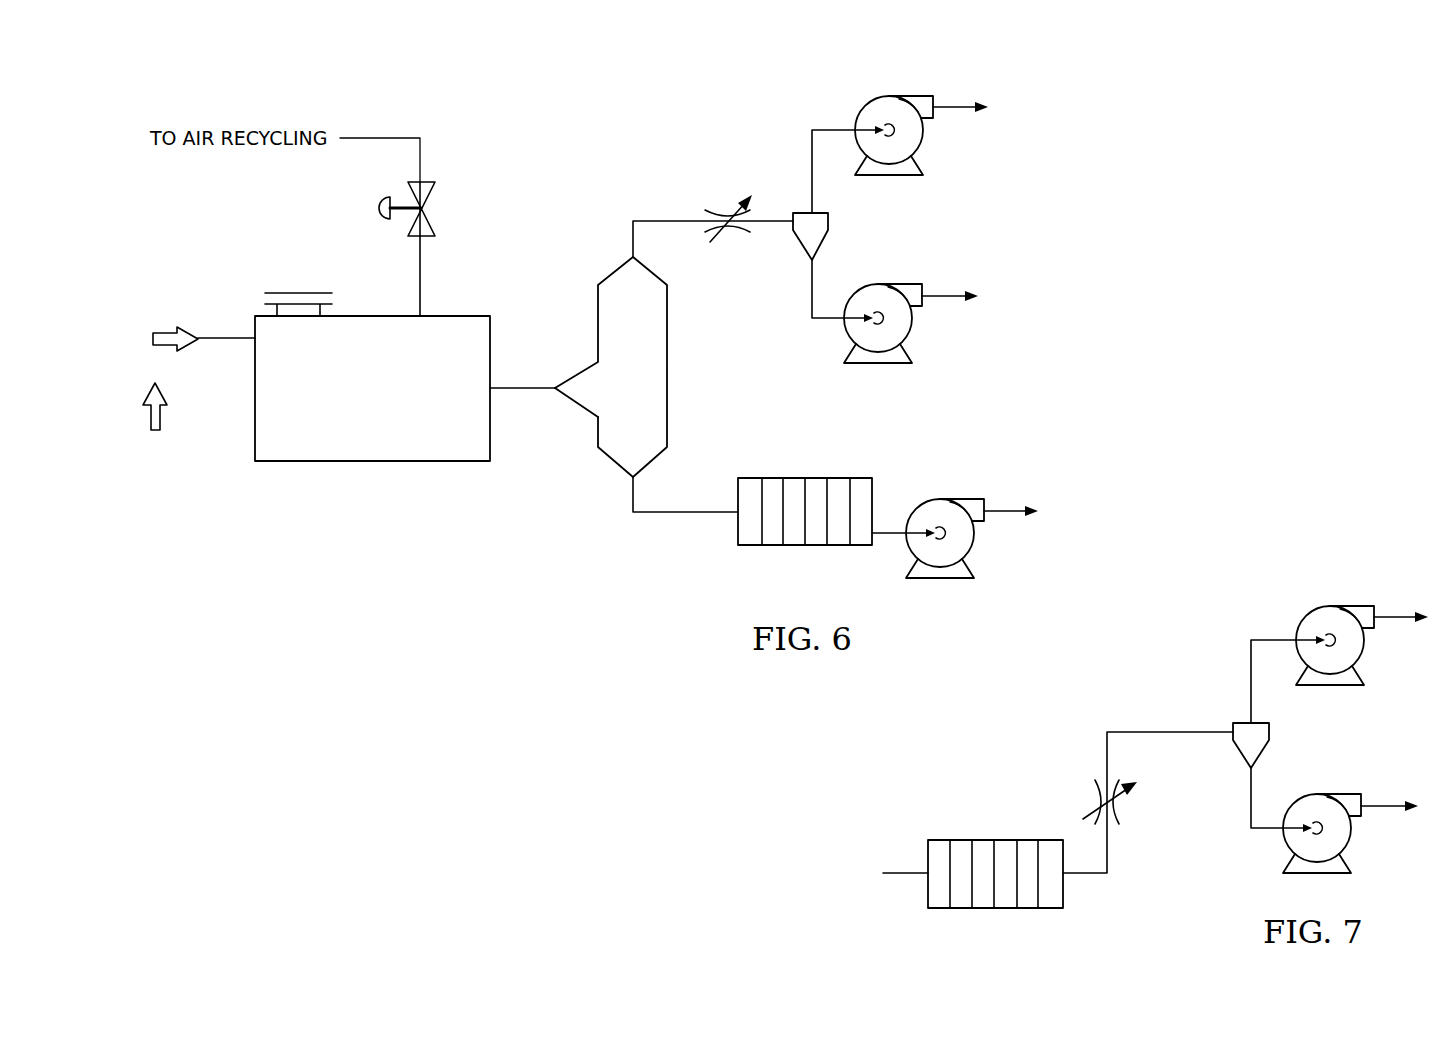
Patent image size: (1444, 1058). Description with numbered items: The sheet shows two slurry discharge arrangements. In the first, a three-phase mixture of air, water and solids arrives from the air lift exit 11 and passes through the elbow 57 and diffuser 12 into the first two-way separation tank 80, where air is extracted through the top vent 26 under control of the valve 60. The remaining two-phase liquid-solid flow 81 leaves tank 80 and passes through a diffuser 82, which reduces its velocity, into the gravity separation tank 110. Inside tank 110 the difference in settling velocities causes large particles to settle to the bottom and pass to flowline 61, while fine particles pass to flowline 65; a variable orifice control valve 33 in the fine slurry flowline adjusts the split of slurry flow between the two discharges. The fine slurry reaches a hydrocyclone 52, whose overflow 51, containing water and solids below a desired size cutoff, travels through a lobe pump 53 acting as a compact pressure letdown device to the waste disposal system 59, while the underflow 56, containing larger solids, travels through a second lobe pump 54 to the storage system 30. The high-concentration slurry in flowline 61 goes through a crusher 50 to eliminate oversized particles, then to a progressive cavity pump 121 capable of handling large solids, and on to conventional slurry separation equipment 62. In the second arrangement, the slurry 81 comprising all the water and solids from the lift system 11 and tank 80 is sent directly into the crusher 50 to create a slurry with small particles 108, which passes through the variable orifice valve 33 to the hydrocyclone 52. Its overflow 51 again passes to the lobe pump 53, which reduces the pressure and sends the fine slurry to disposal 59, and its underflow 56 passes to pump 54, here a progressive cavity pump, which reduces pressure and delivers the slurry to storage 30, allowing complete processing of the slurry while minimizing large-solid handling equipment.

In FIG. 6, the air lift exit 11 is at (163, 415).
In FIG. 6, the diffuser 12 is at (226, 338).
In FIG. 6, the top vent 26 is at (421, 277).
In FIG. 6, the storage system 30 is at (947, 298).
In FIG. 7, the storage system 30 is at (1386, 809).
In FIG. 6, the variable orifice valve 33 is at (731, 235).
In FIG. 7, the variable orifice valve 33 is at (1093, 790).
In FIG. 6, the crusher 50 is at (818, 548).
In FIG. 7, the crusher 50 is at (1008, 910).
In FIG. 6, the hydrocyclone overflow 51 is at (812, 172).
In FIG. 7, the hydrocyclone overflow 51 is at (1251, 681).
In FIG. 6, the hydrocyclone 52 is at (828, 224).
In FIG. 7, the hydrocyclone 52 is at (1269, 734).
In FIG. 6, the lobe pump 53 is at (888, 96).
In FIG. 7, the lobe pump 53 is at (1330, 606).
In FIG. 6, the lobe pump 54 is at (880, 285).
In FIG. 7, the lobe pump 54 is at (1319, 795).
In FIG. 6, the hydrocyclone underflow 56 is at (812, 289).
In FIG. 7, the hydrocyclone underflow 56 is at (1251, 800).
In FIG. 6, the elbow 57 is at (168, 332).
In FIG. 6, the waste disposal system 59 is at (955, 106).
In FIG. 7, the waste disposal system 59 is at (1397, 616).
In FIG. 6, the valve 60 is at (378, 208).
In FIG. 6, the flowline 61 is at (687, 515).
In FIG. 6, the conventional slurry separation equipment 62 is at (1008, 515).
In FIG. 6, the flowline 65 is at (672, 219).
In FIG. 6, the separation tank 80 is at (370, 463).
In FIG. 6, the flowline 81 is at (532, 386).
In FIG. 7, the flowline 81 is at (903, 875).
In FIG. 6, the diffuser 82 is at (577, 405).
In FIG. 7, the slurry with small particles 108 is at (1108, 850).
In FIG. 6, the gravity separation tank 110 is at (618, 268).
In FIG. 6, the progressive cavity pump 121 is at (940, 580).